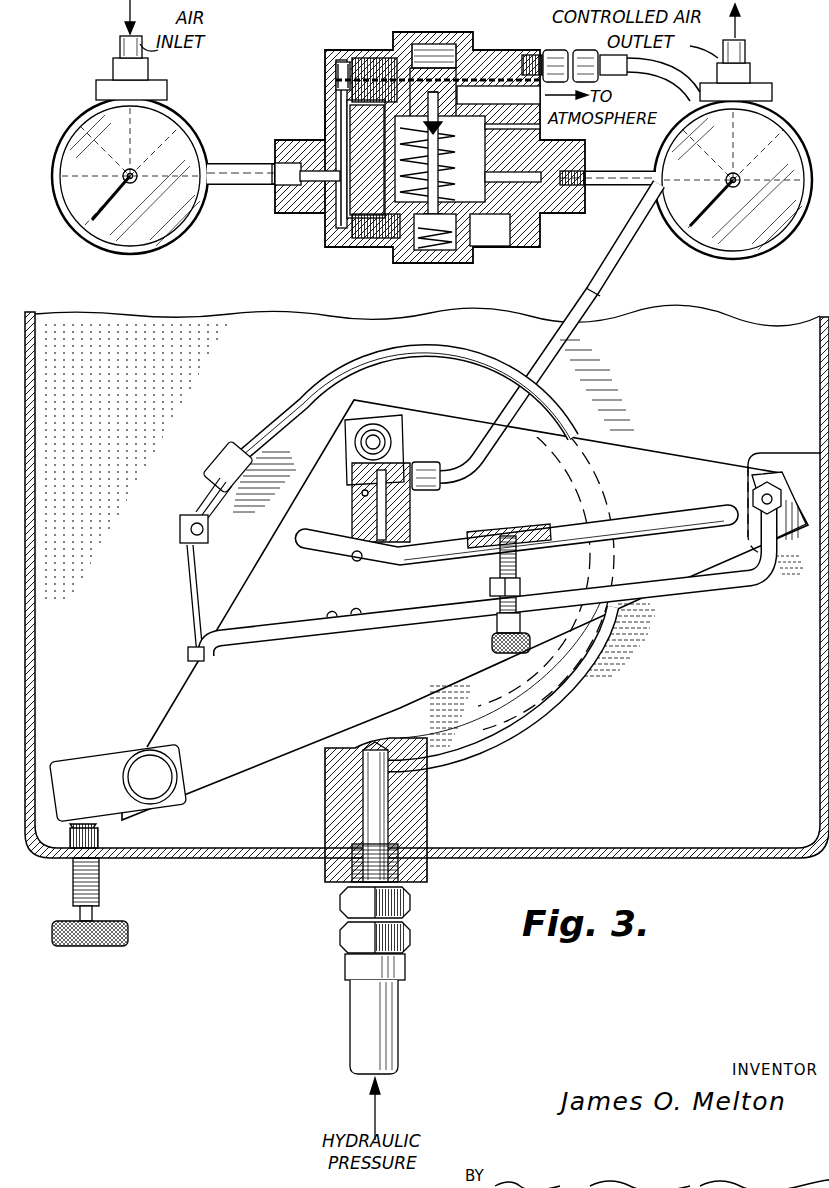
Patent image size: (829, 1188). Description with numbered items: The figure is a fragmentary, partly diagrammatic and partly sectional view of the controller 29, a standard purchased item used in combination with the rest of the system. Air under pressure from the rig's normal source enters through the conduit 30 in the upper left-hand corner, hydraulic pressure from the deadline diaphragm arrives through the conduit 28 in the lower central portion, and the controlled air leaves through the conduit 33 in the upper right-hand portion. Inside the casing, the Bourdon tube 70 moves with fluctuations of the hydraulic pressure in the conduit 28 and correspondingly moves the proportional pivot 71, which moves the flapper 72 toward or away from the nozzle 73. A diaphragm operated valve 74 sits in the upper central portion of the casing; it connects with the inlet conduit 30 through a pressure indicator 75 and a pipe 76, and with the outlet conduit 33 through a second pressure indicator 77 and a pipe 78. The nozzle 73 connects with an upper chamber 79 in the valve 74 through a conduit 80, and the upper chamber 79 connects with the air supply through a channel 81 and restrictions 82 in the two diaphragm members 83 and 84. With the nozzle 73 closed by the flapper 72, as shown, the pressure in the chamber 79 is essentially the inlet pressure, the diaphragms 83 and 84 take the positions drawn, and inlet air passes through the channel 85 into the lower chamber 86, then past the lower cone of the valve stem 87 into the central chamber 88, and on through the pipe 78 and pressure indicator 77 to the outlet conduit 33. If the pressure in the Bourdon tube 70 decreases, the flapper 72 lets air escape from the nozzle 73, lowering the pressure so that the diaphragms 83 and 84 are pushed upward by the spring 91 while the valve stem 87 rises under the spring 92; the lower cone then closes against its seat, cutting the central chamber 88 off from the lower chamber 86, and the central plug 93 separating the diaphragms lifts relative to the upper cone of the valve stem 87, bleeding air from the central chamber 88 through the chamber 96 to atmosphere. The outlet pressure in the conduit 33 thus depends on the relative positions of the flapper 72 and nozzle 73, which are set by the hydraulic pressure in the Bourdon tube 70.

The conduit 28 is at (358, 1028).
The controller 29 is at (693, 855).
The conduit 30 is at (112, 46).
The conduit 33 is at (752, 50).
The Bourdon tube 70 is at (300, 386).
The proportional pivot 71 is at (492, 566).
The flapper 72 is at (628, 512).
The nozzle 73 is at (356, 504).
The diaphragm operated valve 74 is at (446, 150).
The pressure indicator 75 is at (168, 112).
The pipe 76 is at (232, 164).
The second pressure indicator 77 is at (778, 114).
The pipe 78 is at (626, 186).
The upper chamber 79 is at (378, 60).
The conduit 80 is at (620, 258).
The channel 81 is at (332, 130).
The restrictions 82 is at (338, 94).
The diaphragm member 83 is at (488, 86).
The diaphragm member 84 is at (540, 126).
The channel 85 is at (338, 195).
The lower chamber 86 is at (386, 240).
The valve stem 87 is at (456, 162).
The central chamber 88 is at (480, 222).
The spring 91 is at (478, 138).
The spring 92 is at (430, 254).
The central plug 93 is at (436, 78).
The chamber 96 is at (518, 62).